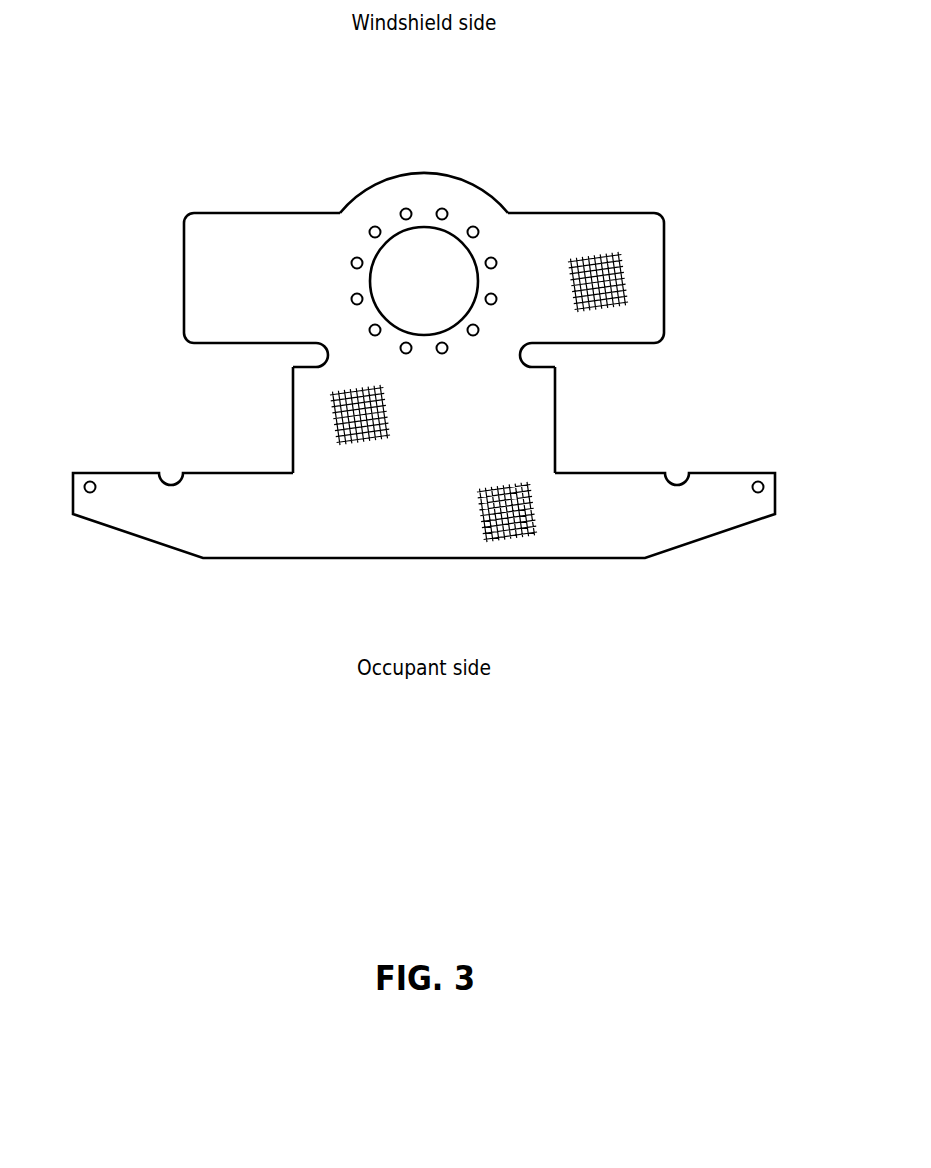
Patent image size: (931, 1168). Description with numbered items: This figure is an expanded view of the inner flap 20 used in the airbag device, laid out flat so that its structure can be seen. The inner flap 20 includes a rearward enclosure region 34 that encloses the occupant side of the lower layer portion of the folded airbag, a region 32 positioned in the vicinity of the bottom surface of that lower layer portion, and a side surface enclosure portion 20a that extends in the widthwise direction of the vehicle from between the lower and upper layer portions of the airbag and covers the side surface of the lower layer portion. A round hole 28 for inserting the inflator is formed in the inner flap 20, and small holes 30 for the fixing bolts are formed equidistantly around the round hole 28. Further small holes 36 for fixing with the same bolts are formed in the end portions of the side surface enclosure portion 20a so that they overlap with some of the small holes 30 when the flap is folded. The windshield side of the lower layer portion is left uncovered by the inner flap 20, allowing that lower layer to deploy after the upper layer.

The inner flap 20 is at (557, 149).
The side surface enclosure portion 20a is at (132, 523).
The round hole 28 is at (427, 230).
The small holes 30 is at (474, 226).
The side wing portions of bracket 32 is at (223, 223).
The rearward enclosure region 34 is at (545, 428).
The small holes 36 is at (90, 481).